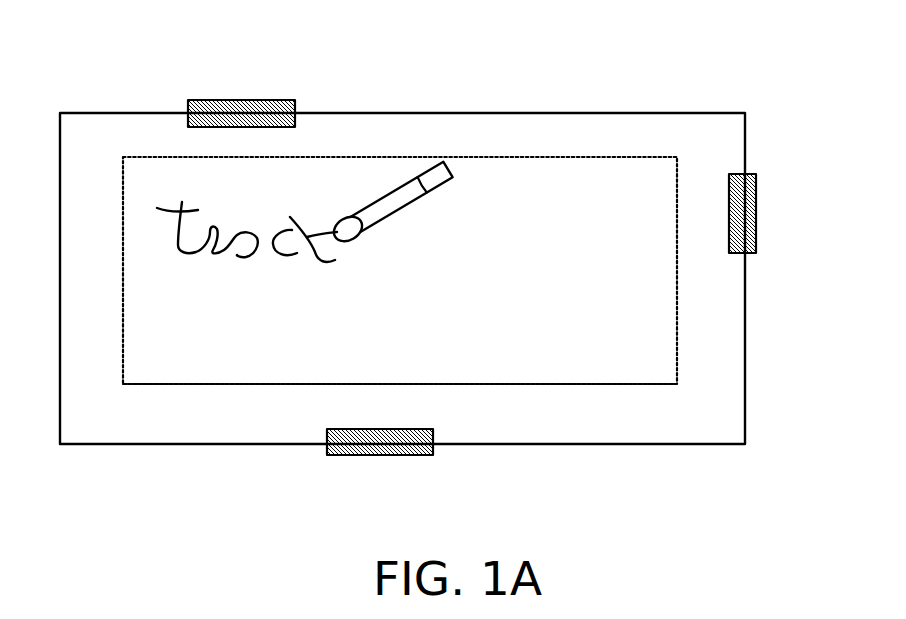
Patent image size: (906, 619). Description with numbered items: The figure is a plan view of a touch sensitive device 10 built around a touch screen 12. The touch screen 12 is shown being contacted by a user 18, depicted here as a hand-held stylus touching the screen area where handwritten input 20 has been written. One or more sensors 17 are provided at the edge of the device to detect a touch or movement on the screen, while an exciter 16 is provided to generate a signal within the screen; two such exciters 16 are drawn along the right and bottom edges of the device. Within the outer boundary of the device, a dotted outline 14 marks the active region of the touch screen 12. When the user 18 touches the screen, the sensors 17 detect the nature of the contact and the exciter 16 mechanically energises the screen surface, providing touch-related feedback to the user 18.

The touch sensitive device 10 is at (662, 85).
The touch screen 12 is at (290, 424).
The touch-sensitive area boundary 14 is at (174, 386).
The exciter 16 is at (758, 228).
The sensor 17 is at (221, 99).
The user 18 is at (450, 170).
The handwritten input 20 is at (175, 235).